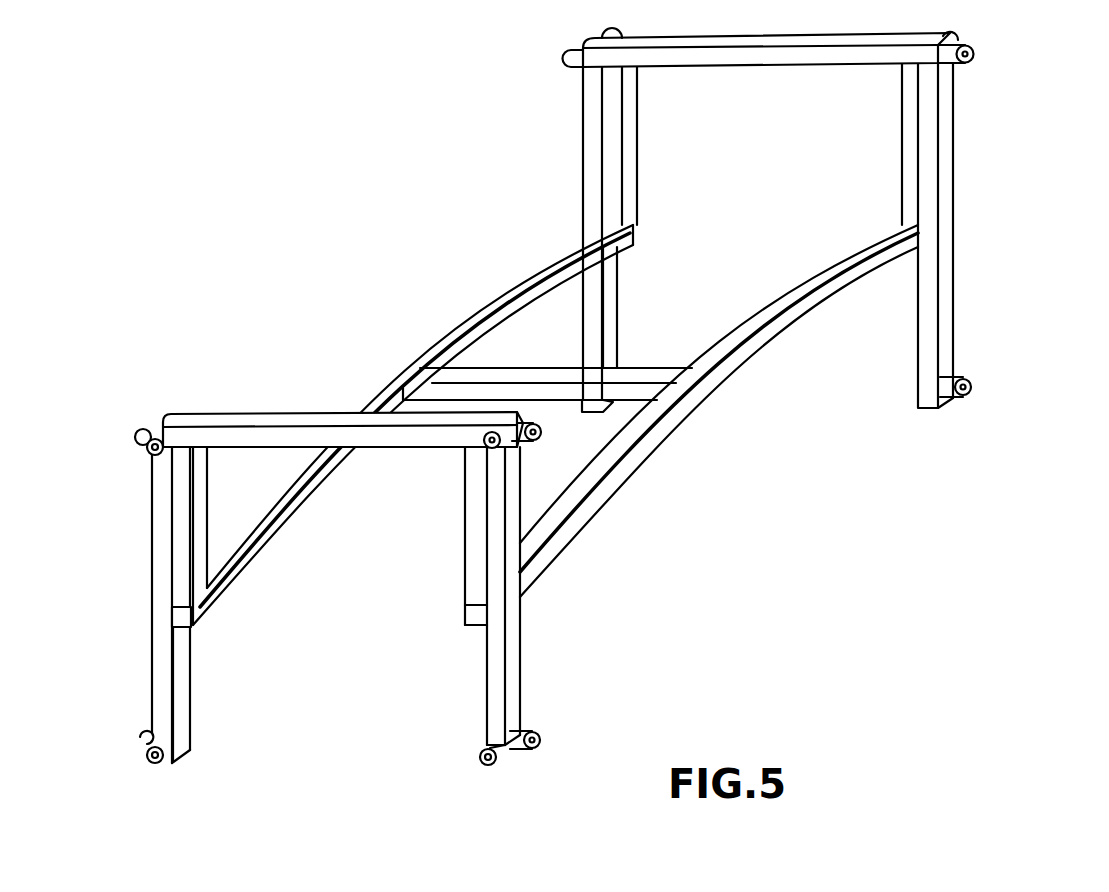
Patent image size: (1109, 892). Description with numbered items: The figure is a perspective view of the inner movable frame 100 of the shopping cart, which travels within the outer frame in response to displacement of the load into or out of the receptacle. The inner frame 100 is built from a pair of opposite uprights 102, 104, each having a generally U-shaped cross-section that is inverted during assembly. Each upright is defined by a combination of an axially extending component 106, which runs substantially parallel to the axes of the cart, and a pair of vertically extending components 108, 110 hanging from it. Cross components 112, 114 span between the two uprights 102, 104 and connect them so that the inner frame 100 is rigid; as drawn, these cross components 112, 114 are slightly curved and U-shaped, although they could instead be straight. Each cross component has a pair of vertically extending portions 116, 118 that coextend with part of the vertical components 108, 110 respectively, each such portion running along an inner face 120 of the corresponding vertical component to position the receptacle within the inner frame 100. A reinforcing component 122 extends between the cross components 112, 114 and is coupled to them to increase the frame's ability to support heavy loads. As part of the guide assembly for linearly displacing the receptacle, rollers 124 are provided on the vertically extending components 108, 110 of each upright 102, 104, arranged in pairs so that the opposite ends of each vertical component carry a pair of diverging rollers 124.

The inner frame 100 is at (340, 292).
The upright 102 is at (255, 757).
The upright 104 is at (1000, 42).
The axially extending component 106 is at (258, 428).
The vertically extending component 108 is at (162, 578).
The vertically extending component 110 is at (513, 658).
The cross component 112 is at (465, 345).
The cross component 114 is at (680, 418).
The vertically extending portion 116 is at (183, 492).
The vertically extending portion 118 is at (470, 530).
The inner face 120 is at (181, 668).
The reinforcing component 122 is at (553, 372).
The rollers 124 is at (157, 439).